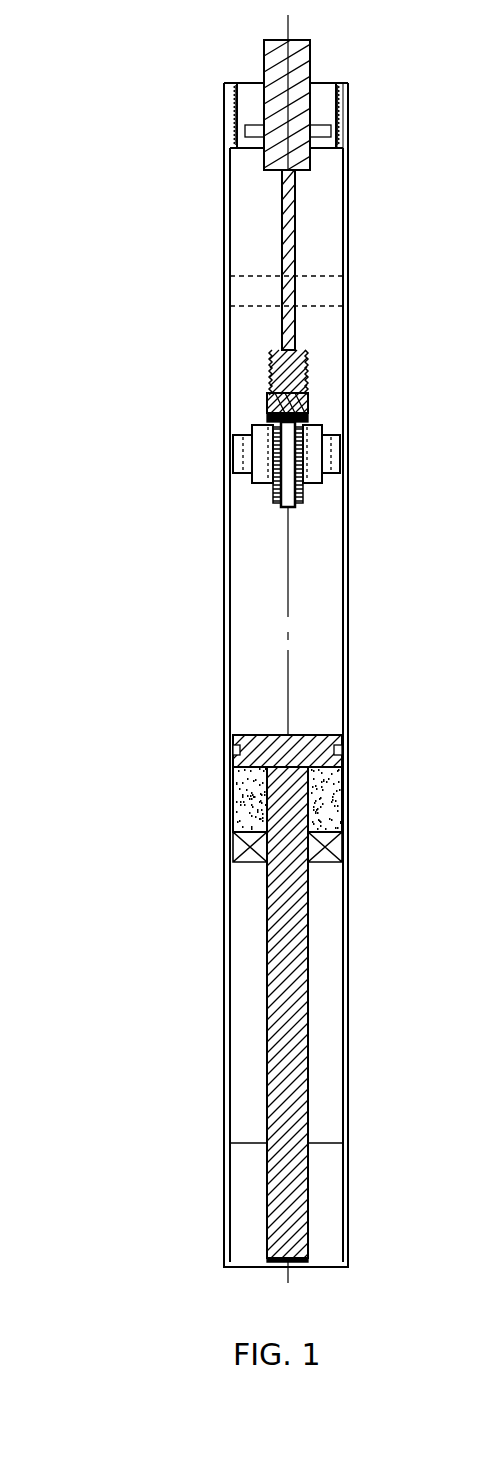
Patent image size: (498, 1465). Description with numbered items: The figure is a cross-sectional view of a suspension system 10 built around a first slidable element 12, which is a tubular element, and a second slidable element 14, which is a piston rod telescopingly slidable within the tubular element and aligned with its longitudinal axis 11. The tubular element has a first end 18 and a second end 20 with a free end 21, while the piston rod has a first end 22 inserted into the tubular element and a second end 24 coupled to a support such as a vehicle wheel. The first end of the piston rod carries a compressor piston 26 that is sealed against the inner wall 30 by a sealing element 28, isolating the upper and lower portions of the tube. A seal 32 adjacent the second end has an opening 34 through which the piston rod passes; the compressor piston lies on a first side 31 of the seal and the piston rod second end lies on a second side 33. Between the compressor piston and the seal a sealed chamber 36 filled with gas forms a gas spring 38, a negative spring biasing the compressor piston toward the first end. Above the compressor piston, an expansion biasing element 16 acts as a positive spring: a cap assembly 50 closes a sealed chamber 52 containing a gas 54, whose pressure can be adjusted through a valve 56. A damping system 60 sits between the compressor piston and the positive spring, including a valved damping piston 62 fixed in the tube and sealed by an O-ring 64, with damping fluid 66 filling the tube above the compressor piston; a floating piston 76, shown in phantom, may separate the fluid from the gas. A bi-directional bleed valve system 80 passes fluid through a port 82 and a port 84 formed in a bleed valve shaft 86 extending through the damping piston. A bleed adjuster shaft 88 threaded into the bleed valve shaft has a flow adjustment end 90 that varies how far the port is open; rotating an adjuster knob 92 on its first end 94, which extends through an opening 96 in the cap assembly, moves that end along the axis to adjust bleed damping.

The suspension system 10 is at (118, 341).
The longitudinal axis 11 is at (290, 1278).
The first slidable element 12 is at (224, 560).
The second slidable element 14 is at (267, 917).
The expansion biasing element 16 is at (240, 250).
The first end 18 is at (222, 167).
The second end 20 is at (224, 988).
The free end 21 is at (348, 1143).
The first end 22 is at (265, 790).
The second end 24 is at (267, 1215).
The compressor piston 26 is at (240, 735).
The sealing element 28 is at (340, 751).
The inner wall 30 is at (340, 770).
The first side 31 is at (327, 830).
The seal 32 is at (343, 840).
The second side 33 is at (310, 855).
The opening 34 is at (344, 889).
The chamber 36 is at (335, 805).
The gas spring 38 is at (245, 806).
The cap assembly 50 is at (245, 83).
The chamber 52 is at (236, 191).
The gas 54 is at (245, 229).
The valve 56 is at (348, 142).
The damping system 60 is at (390, 511).
The damping piston 62 is at (234, 449).
The O-ring 64 is at (250, 470).
The damping fluid 66 is at (320, 617).
The floating piston 76 is at (347, 279).
The bi-directional bleed valve system 80 is at (310, 421).
The port 82 is at (310, 413).
The port 84 is at (293, 508).
The bleed valve shaft 86 is at (283, 508).
The bleed adjuster shaft 88 is at (297, 222).
The flow adjustment end 90 is at (273, 383).
The adjuster knob 92 is at (300, 45).
The first end 94 is at (297, 185).
The opening 96 is at (318, 132).